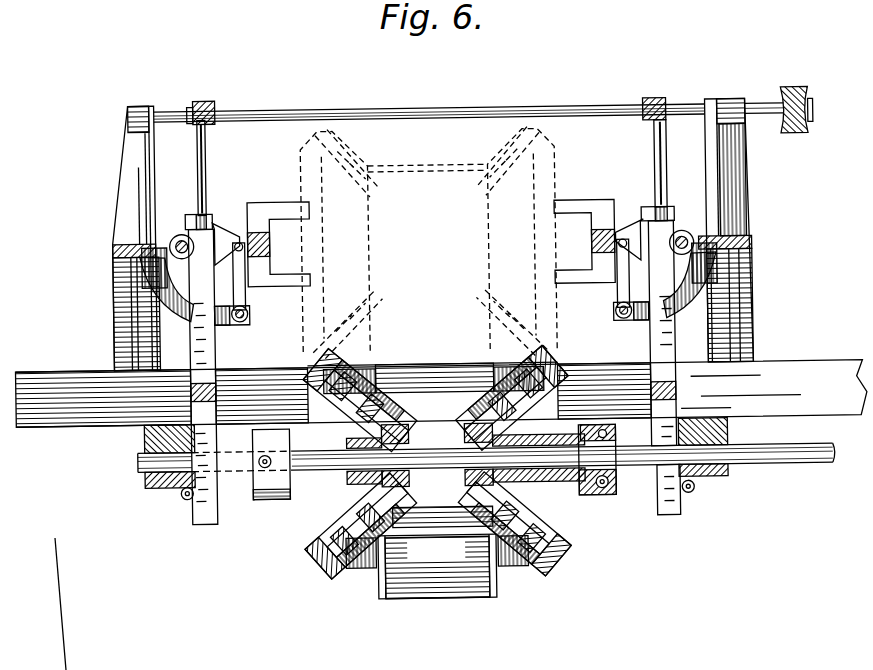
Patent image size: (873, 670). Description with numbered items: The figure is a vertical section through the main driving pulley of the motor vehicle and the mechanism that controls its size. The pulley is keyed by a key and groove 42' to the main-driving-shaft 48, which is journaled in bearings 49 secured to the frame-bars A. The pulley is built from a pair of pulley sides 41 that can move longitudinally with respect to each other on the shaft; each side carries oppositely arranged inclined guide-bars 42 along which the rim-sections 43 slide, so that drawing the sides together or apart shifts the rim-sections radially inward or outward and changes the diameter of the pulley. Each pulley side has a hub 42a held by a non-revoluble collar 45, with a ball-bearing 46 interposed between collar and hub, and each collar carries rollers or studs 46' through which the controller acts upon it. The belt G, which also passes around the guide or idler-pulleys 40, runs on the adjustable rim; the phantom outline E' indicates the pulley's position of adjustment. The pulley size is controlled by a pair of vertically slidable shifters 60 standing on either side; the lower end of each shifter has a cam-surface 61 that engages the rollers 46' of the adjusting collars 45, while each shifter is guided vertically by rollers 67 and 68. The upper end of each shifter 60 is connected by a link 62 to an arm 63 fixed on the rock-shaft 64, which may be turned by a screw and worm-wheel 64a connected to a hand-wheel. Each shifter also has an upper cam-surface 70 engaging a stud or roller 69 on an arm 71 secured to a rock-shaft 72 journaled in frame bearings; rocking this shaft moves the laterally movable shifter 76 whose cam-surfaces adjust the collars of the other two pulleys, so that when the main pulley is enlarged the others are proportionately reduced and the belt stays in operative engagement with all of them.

The guide or idler-pulleys 40 is at (437, 566).
The pulley sides 41 is at (324, 574).
The inclined guide-bars 42 is at (461, 477).
The key and groove 42' is at (465, 435).
The hub 42a is at (398, 470).
The rim-sections 43 is at (418, 388).
The collar 45 is at (273, 497).
The ball-bearing 46 is at (647, 518).
The rollers or studs 46' is at (245, 506).
The main-driving-shaft 48 is at (809, 470).
The bearings 49 is at (144, 437).
The shifters 60 is at (160, 342).
The cam-surface 61 is at (198, 508).
The link 62 is at (209, 160).
The arm 63 is at (217, 101).
The rock-shaft 64 is at (522, 107).
The screw and worm-wheel 64a is at (816, 115).
The roller 67 is at (172, 238).
The roller 68 is at (179, 491).
The stud or roller 69 is at (246, 298).
The cam-surface 70 is at (222, 240).
The arm 71 is at (160, 285).
The rock-shaft 72 is at (244, 322).
The shifter 76 is at (311, 248).
The frame-bars A is at (442, 394).
The gear housing E' is at (453, 390).
The belt G is at (488, 258).